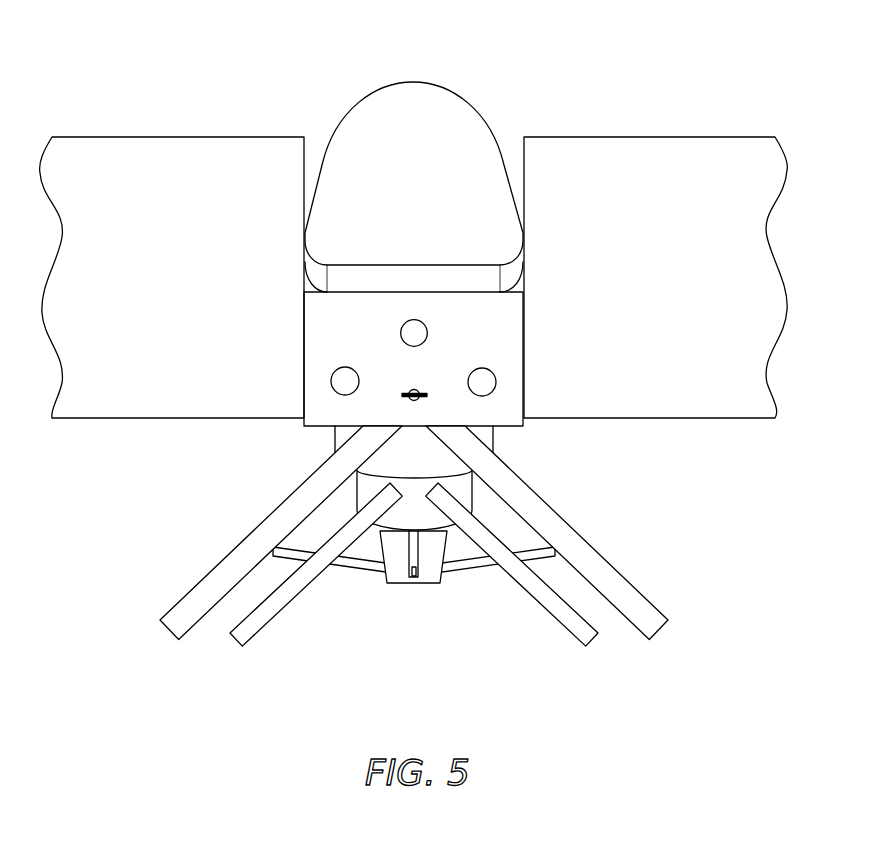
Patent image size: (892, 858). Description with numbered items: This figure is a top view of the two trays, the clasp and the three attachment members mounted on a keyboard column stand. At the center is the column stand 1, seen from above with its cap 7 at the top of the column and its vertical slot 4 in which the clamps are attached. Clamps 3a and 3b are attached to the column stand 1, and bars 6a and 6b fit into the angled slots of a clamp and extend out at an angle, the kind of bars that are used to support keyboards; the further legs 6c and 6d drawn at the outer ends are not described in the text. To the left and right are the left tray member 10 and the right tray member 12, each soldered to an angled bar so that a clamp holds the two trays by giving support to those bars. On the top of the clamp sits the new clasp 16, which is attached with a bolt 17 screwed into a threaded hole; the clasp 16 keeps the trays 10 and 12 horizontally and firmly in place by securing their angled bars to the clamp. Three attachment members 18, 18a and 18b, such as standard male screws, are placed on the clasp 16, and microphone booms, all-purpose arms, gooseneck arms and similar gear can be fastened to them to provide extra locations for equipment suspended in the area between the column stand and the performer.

The column stand 1 is at (423, 585).
The clamp 3a is at (472, 492).
The clamp 3b is at (493, 438).
The vertical slot 4 is at (413, 577).
The bar 6a is at (248, 635).
The bar 6b is at (580, 633).
The leg 6c is at (227, 567).
The leg 6d is at (600, 567).
The cap 7 is at (442, 103).
The left tray member 10 is at (108, 152).
The right tray member 12 is at (718, 152).
The clasp 16 is at (313, 405).
The bolt 17 is at (417, 390).
The attachment member 18 is at (342, 380).
The attachment member 18a is at (411, 333).
The attachment member 18b is at (485, 382).